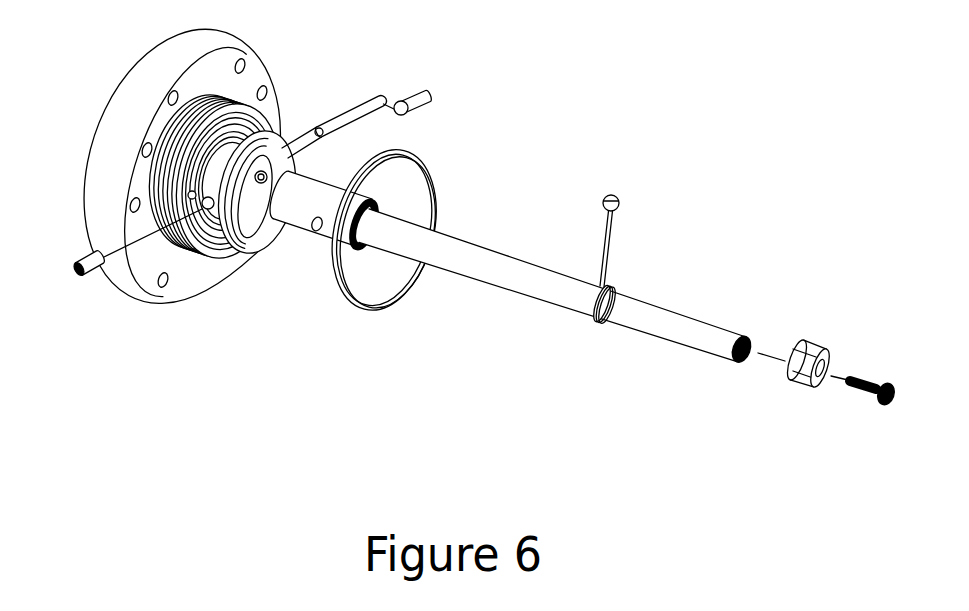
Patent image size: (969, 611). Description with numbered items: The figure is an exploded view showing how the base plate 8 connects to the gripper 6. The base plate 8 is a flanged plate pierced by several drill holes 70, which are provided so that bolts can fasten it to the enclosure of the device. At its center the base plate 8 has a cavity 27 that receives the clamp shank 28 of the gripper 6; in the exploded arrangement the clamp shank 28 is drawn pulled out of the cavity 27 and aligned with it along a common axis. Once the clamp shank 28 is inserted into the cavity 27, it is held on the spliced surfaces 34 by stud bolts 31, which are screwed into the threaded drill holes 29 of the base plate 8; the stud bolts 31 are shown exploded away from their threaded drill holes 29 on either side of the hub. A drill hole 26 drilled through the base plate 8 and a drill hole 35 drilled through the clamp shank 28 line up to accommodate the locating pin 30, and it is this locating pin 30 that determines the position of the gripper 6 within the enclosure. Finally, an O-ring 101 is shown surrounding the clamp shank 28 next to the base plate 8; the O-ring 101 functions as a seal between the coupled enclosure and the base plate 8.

The base plate 8 is at (258, 55).
The drill holes 70 is at (153, 290).
The threaded drill holes 29 is at (190, 193).
The drill hole 26 is at (210, 210).
The cavity 27 is at (282, 147).
The clamp shank 28 is at (322, 195).
The drill hole 35 is at (306, 240).
The spliced surfaces 34 is at (322, 232).
The O-ring 101 is at (432, 152).
The gripper 6 is at (559, 273).
The locating pin 30 is at (378, 100).
The stud bolts 31 is at (428, 94).